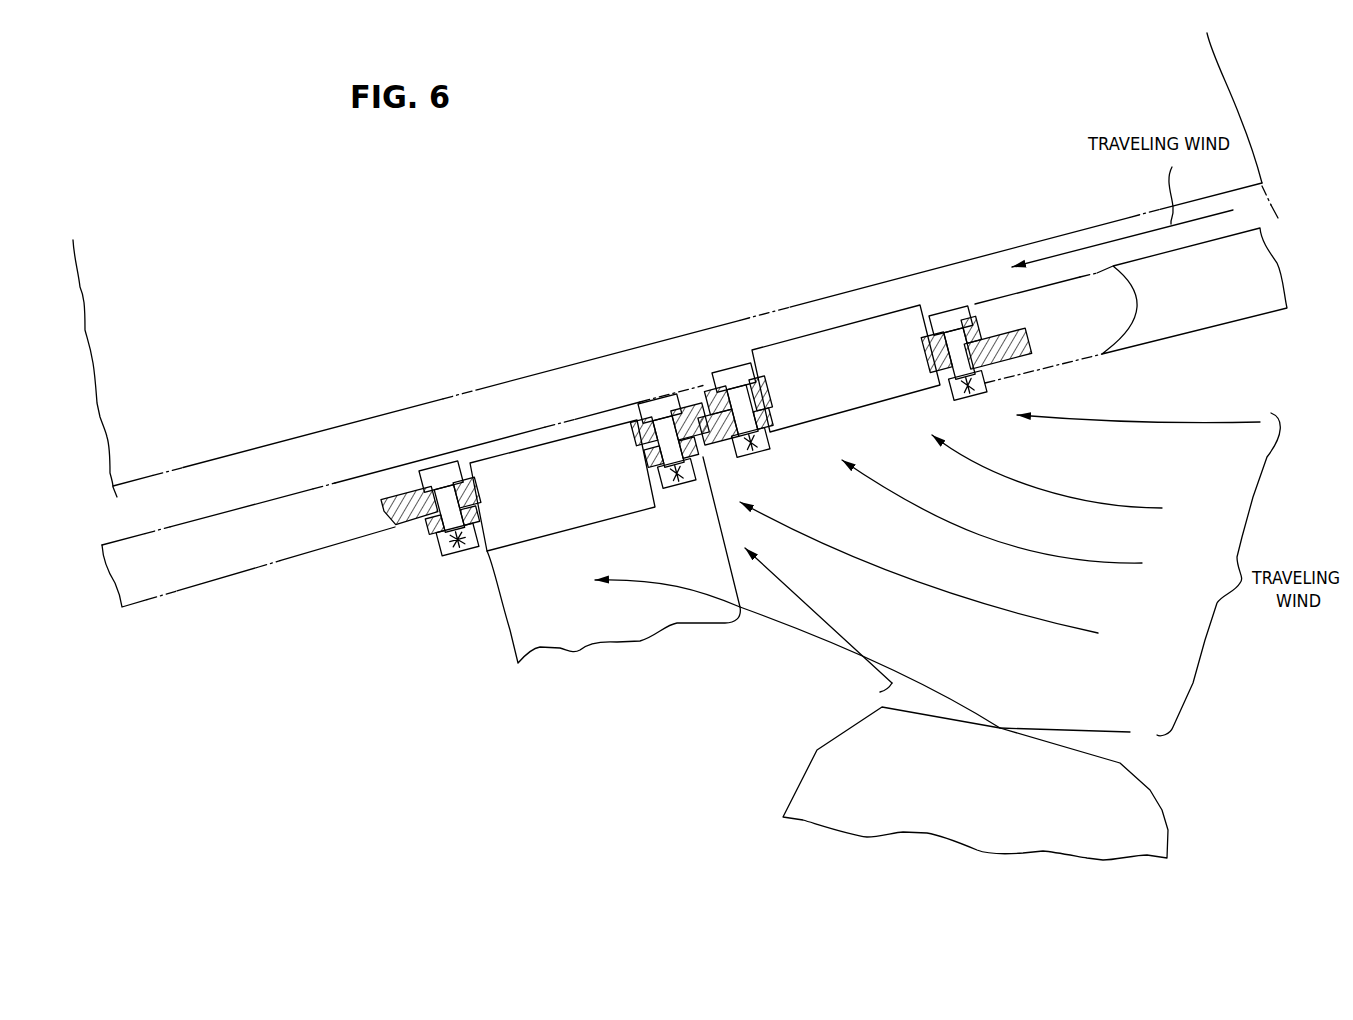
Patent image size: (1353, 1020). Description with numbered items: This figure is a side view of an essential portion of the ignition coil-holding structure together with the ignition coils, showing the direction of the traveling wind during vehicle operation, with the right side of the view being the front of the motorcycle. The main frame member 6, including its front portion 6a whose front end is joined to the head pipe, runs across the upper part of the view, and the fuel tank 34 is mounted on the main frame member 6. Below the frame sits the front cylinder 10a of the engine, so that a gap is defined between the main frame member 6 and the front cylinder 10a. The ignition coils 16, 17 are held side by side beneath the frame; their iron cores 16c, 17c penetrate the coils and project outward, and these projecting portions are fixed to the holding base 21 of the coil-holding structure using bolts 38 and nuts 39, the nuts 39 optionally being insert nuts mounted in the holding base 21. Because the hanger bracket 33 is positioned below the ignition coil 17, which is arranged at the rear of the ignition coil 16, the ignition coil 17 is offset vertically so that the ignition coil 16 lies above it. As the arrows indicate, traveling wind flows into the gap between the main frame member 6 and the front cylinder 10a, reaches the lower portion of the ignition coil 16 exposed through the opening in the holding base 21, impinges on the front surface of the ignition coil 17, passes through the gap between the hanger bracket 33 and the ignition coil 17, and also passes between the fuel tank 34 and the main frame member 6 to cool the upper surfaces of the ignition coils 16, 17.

The main frame member 6 is at (180, 595).
The front portion 6a is at (1217, 330).
The front cylinder 10a is at (1155, 808).
The ignition coil 16 is at (880, 320).
The iron core 16c is at (980, 337).
The ignition coil 17 is at (540, 452).
The iron core 17c is at (425, 532).
The holding base 21 is at (413, 528).
The hanger bracket 33 is at (523, 637).
The fuel tank 34 is at (87, 340).
The bolt 38 is at (733, 363).
The nut 39 is at (452, 467).